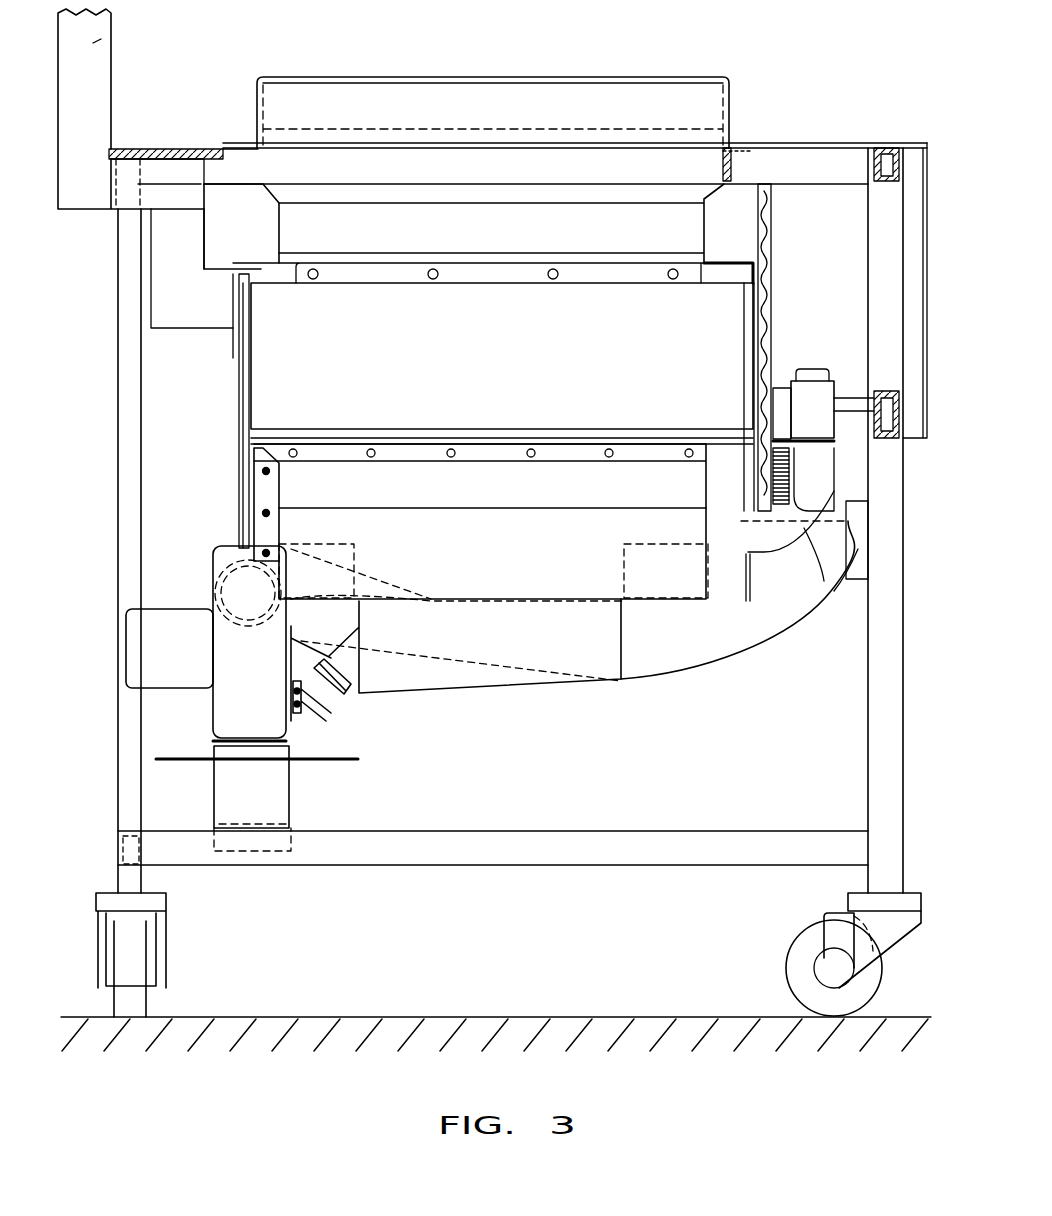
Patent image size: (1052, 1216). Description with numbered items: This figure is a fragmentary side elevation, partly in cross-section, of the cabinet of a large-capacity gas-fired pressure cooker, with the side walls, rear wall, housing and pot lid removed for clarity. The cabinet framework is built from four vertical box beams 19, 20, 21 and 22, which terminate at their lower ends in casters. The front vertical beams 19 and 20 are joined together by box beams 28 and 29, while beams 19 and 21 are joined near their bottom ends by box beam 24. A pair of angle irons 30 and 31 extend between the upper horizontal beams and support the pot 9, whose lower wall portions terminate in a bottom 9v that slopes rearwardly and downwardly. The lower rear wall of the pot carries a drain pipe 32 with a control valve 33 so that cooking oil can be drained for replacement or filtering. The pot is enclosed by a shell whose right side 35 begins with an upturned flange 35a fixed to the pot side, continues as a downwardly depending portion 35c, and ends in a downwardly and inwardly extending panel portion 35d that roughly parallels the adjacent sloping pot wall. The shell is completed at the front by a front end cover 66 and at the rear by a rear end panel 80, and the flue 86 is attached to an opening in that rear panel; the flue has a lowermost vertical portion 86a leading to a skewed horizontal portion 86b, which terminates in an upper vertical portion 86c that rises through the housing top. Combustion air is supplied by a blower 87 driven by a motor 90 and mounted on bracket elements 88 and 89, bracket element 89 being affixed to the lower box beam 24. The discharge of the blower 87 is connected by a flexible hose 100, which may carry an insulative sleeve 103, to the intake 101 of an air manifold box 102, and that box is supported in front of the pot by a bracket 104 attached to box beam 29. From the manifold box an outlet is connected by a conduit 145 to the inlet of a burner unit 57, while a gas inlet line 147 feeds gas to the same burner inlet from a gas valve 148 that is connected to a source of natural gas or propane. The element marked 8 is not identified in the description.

The top plate 8 is at (786, 142).
The pot 9 is at (501, 223).
The bottom 9v is at (483, 693).
The vertical box beam 19 is at (880, 703).
The vertical box beam 20 is at (880, 800).
The vertical box beam 21 is at (125, 458).
The vertical box beam 22 is at (133, 790).
The box beam 24 is at (510, 835).
The box beam 28 is at (886, 182).
The box beam 29 is at (875, 413).
The angle iron 30 is at (257, 165).
The angle iron 31 is at (731, 160).
The drain pipe 32 is at (352, 692).
The control valve 33 is at (325, 712).
The shell side 35 is at (493, 411).
The upturned flange 35a is at (505, 298).
The downwardly depending portion 35c is at (707, 397).
The downwardly and inwardly extending panel portion 35d is at (745, 440).
The burner unit 57 is at (481, 522).
The front end cover 66 is at (764, 299).
The rear end panel 80 is at (238, 400).
The flue 86 is at (114, 68).
The lowermost vertical portion 86a is at (192, 268).
The skewed horizontal portion 86b is at (183, 165).
The vertical portion 86c is at (92, 42).
The blower 87 is at (232, 713).
The bracket element 88 is at (285, 660).
The bracket element 89 is at (258, 802).
The motor 90 is at (150, 635).
The flexible hose 100 is at (772, 481).
The intake 101 is at (836, 447).
The air manifold box 102 is at (797, 368).
The insulative sleeve 103 is at (664, 668).
The bracket 104 is at (860, 395).
The conduit 145 is at (806, 530).
The gas inlet line 147 is at (752, 553).
The gas valve 148 is at (857, 548).